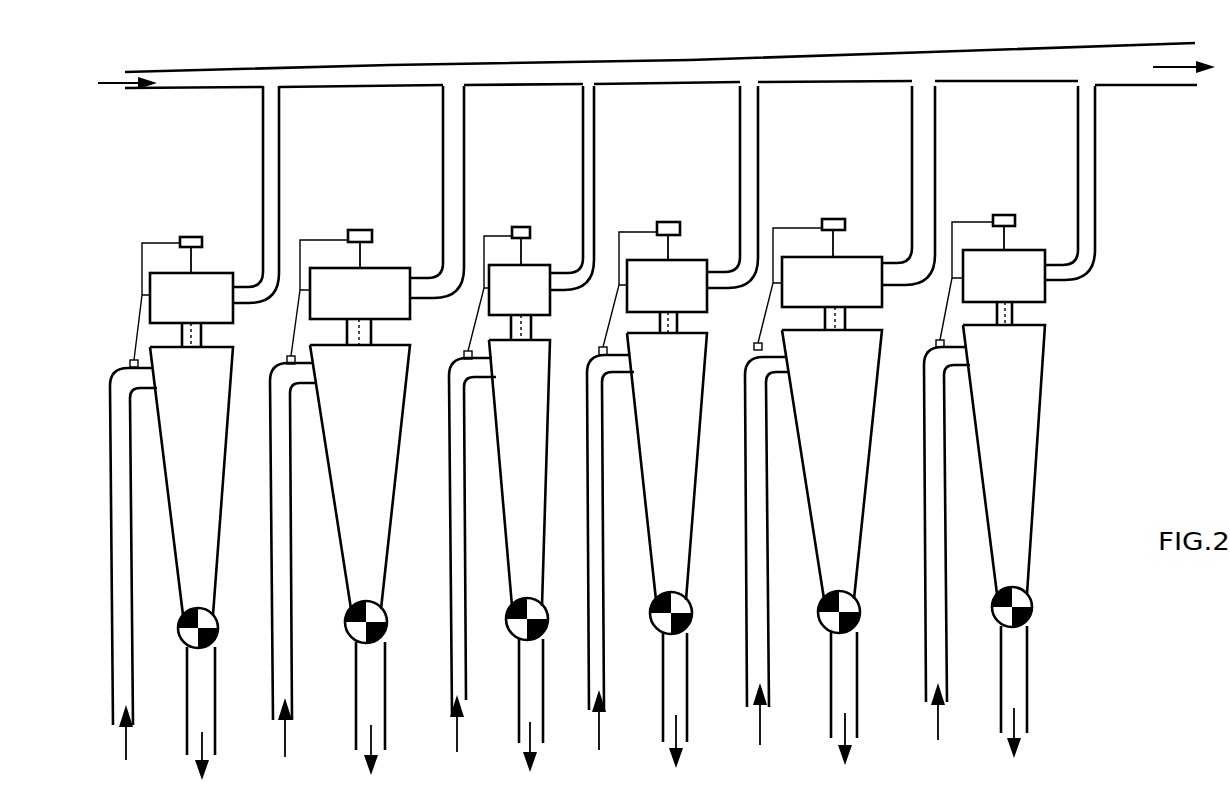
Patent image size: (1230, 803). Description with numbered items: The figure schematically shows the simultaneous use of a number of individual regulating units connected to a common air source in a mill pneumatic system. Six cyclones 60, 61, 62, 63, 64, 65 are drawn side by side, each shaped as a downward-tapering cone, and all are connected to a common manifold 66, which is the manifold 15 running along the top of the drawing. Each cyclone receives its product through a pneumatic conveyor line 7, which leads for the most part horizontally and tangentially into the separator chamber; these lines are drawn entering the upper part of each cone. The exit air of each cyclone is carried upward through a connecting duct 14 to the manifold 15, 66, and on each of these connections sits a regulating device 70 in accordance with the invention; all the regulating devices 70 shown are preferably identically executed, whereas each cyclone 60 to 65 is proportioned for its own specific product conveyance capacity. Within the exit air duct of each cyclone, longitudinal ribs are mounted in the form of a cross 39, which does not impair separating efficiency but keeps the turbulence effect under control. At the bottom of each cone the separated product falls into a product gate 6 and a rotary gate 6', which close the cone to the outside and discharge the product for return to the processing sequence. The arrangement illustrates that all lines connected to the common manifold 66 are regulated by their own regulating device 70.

The manifold 15 is at (656, 50).
The common manifold 66 is at (953, 67).
The connecting duct 14 is at (275, 175).
The regulating device 70 is at (210, 282).
The pneumatic conveyor line 7 is at (121, 386).
The cross 39 is at (1010, 318).
The cyclone 60 is at (191, 551).
The cyclone 61 is at (360, 547).
The cyclone 62 is at (519, 543).
The cyclone 63 is at (667, 540).
The cyclone 64 is at (832, 536).
The cyclone 65 is at (1024, 527).
The product gate 6 is at (1038, 617).
The rotary gate 6' is at (1038, 617).